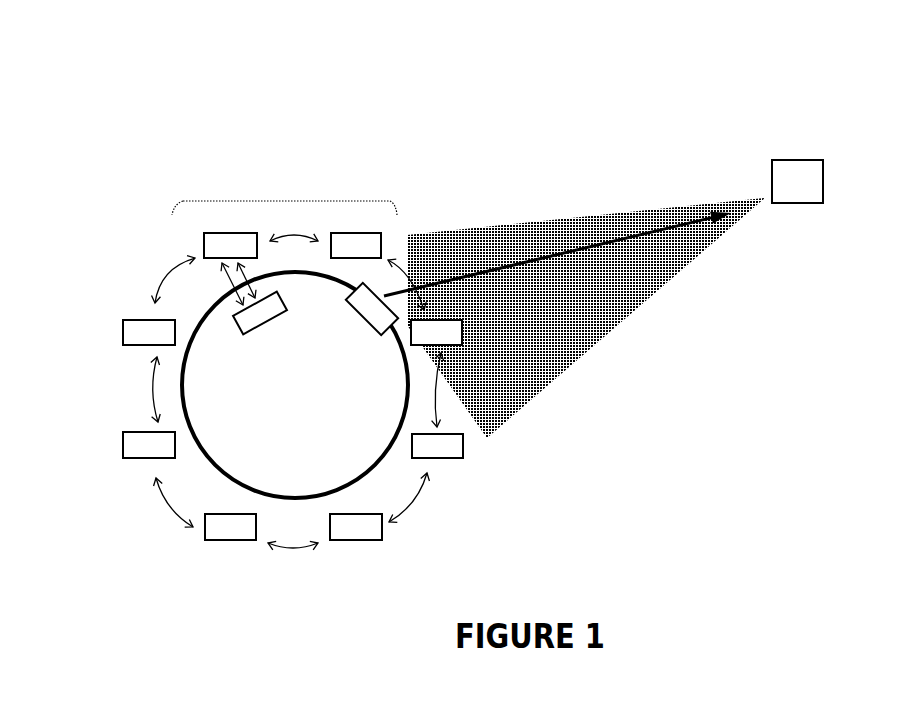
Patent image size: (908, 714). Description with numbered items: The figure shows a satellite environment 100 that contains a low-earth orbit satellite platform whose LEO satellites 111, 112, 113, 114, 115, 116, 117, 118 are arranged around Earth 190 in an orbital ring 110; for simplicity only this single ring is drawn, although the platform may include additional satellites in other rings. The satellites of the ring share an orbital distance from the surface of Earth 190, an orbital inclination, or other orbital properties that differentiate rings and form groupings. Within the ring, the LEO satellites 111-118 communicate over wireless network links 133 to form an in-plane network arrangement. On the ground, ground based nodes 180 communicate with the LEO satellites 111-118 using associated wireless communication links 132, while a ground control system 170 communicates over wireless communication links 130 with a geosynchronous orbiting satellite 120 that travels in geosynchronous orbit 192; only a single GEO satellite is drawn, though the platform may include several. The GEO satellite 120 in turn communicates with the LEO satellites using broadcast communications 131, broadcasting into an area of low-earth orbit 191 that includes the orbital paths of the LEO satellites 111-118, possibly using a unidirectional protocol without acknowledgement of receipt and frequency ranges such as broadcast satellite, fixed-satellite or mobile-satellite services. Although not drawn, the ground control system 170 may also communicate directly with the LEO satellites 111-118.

The satellite environment 100 is at (138, 82).
The orbital ring 110 is at (285, 200).
The LEO satellite 111 is at (230, 245).
The LEO satellite 112 is at (356, 245).
The LEO satellite 113 is at (436, 332).
The LEO satellite 114 is at (437, 446).
The LEO satellite 115 is at (356, 527).
The LEO satellite 116 is at (230, 527).
The LEO satellite 117 is at (149, 445).
The LEO satellite 118 is at (149, 332).
The geosynchronous orbiting satellite 120 is at (797, 181).
The wireless communication links 130 is at (557, 254).
The broadcast communications 131 is at (586, 318).
The wireless communication links 132 is at (247, 281).
The wireless network links 133 is at (294, 229).
The ground control system 170 is at (372, 309).
The ground based nodes 180 is at (260, 313).
The Earth 190 is at (295, 385).
The low-earth orbit 191 is at (345, 403).
The geosynchronous orbit 192 is at (794, 128).